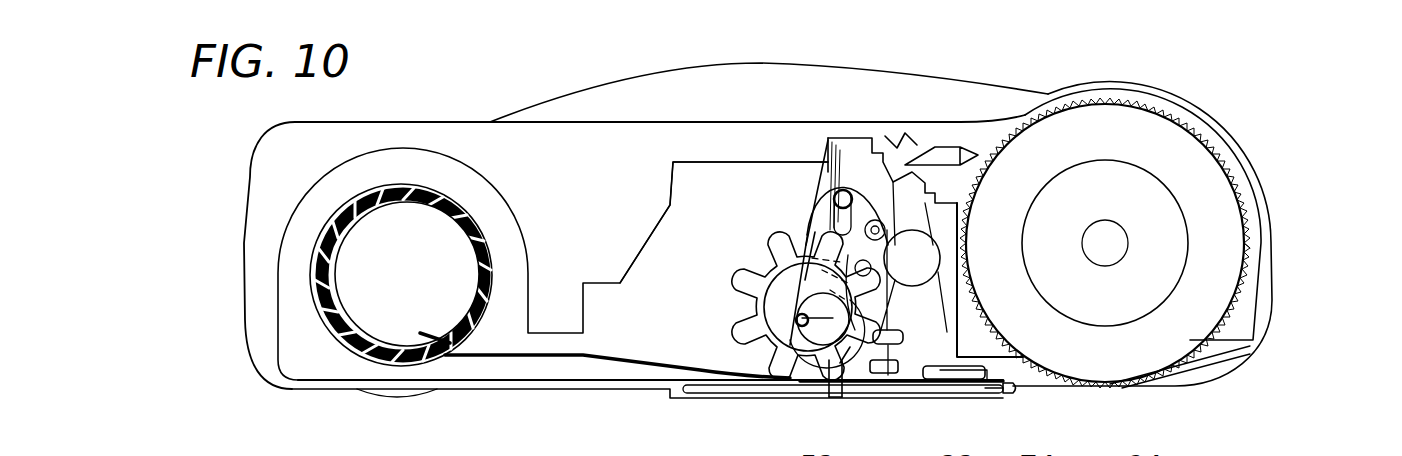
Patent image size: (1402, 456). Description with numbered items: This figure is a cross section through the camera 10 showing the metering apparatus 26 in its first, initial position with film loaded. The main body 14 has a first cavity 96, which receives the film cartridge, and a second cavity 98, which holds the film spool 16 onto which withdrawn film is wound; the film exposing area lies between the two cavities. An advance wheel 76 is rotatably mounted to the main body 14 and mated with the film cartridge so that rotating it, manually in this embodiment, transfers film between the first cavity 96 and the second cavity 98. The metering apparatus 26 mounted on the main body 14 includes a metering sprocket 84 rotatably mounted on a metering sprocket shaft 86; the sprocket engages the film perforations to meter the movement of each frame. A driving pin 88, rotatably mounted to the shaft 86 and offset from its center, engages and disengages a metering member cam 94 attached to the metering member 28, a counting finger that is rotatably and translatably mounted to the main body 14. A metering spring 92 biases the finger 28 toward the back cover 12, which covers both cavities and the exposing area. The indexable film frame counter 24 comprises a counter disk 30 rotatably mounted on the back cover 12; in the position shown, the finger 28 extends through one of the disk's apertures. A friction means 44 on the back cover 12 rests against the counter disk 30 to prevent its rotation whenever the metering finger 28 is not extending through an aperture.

The camera 10 is at (1177, 80).
The back cover 12 is at (1014, 390).
The main body 14 is at (477, 122).
The film spool 16 is at (325, 297).
The indexable film frame counter 24 is at (1003, 398).
The metering apparatus 26 is at (697, 190).
The metering member 28 is at (852, 388).
The counter disk 30 is at (697, 395).
The friction means 44 is at (948, 392).
The advance wheel 76 is at (1197, 187).
The metering sprocket 84 is at (757, 283).
The metering sprocket shaft 86 is at (827, 308).
The driving pin 88 is at (798, 321).
The metering spring 92 is at (870, 250).
The metering member cam 94 is at (826, 372).
The first cavity 96 is at (1237, 316).
The second cavity 98 is at (318, 200).